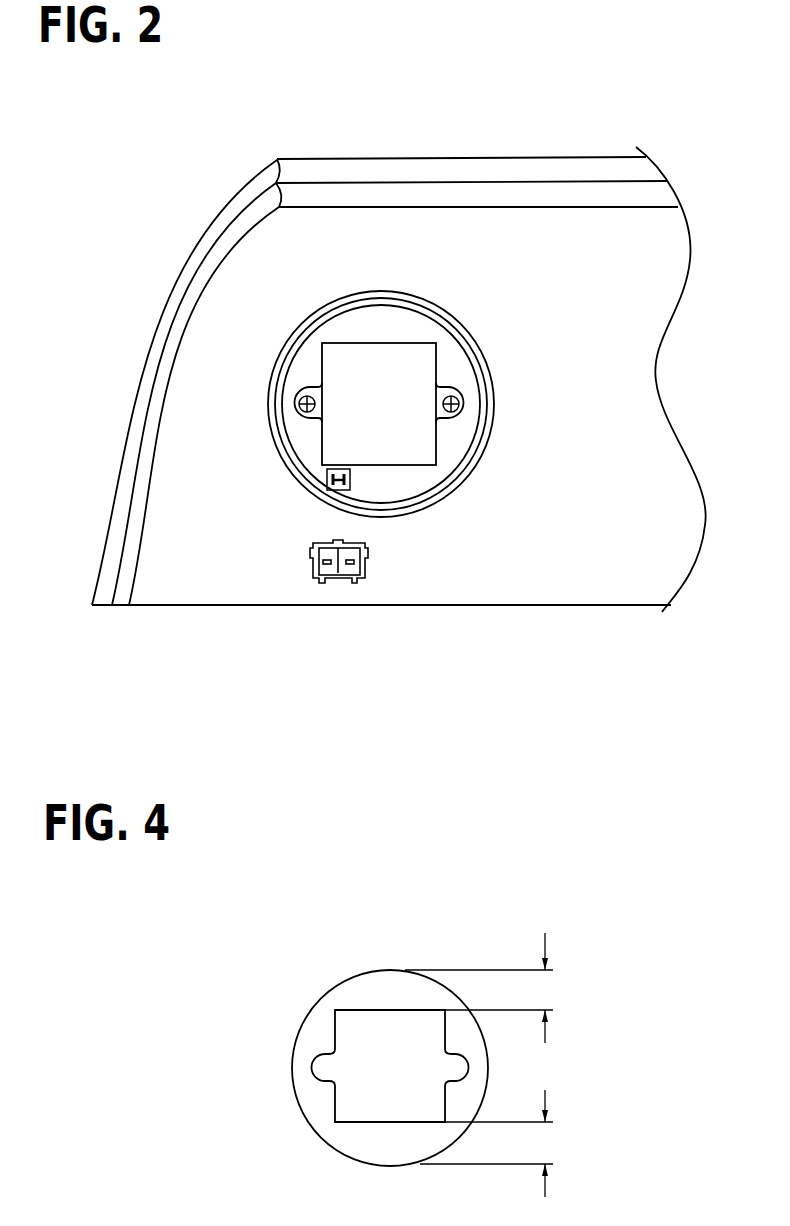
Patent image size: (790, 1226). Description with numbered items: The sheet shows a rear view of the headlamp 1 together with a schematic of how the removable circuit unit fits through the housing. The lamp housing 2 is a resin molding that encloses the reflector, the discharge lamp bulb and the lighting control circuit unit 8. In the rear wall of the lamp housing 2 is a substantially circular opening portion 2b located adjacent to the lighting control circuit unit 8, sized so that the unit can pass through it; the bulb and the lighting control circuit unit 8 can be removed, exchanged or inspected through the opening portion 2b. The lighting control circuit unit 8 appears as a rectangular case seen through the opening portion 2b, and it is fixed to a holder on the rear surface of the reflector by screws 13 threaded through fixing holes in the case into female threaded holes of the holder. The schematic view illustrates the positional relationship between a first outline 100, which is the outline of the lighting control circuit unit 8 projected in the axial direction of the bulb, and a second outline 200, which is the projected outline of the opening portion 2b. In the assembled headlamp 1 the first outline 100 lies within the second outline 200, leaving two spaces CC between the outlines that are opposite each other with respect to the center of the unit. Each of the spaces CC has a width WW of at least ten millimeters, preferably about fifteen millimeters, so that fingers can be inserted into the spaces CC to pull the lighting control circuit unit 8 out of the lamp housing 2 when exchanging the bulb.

In FIG. 2, the headlamp 1 is at (106, 248).
In FIG. 2, the lamp housing 2 is at (533, 233).
In FIG. 2, the opening portion 2b is at (427, 320).
In FIG. 2, the lighting control circuit unit 8 is at (338, 343).
In FIG. 2, the screws 13 is at (300, 413).
In FIG. 4, the first outline 100 is at (347, 1008).
In FIG. 4, the second outline 200 is at (348, 978).
In FIG. 4, the spaces CC is at (387, 990).
In FIG. 4, the width WW is at (500, 1065).